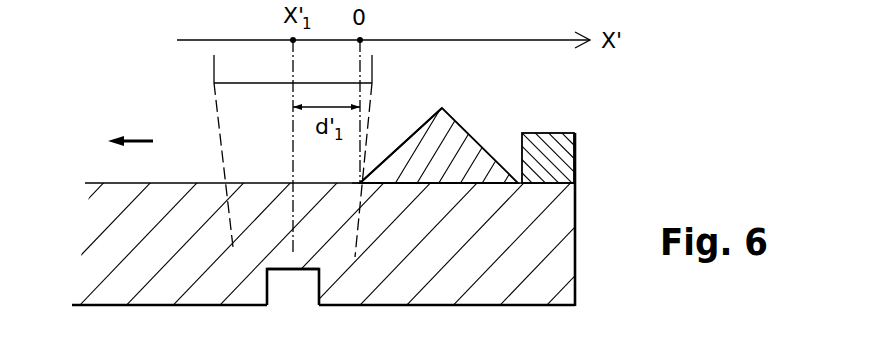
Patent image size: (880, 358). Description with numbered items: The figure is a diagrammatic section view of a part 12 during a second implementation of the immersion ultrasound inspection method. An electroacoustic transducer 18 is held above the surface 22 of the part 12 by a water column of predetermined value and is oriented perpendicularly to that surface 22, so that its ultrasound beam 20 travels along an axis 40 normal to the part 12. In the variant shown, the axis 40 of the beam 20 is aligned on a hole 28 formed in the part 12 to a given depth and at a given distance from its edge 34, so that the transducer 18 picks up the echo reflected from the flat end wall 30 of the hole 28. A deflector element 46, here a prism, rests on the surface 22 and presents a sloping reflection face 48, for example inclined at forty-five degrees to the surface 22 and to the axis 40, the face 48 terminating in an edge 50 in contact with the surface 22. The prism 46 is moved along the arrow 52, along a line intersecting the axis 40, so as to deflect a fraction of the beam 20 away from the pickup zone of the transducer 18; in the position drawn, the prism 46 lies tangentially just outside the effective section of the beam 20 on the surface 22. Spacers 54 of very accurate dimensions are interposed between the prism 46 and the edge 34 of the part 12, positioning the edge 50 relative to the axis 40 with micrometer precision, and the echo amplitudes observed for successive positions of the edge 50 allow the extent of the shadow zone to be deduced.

The part 12 is at (148, 297).
The electroacoustic transducer 18 is at (228, 68).
The ultrasound beam 20 is at (232, 123).
The surface 22 is at (117, 183).
The hole 28 is at (312, 281).
The flat end wall 30 is at (305, 269).
The edge 34 is at (575, 183).
The axis 40 is at (293, 164).
The deflector element 46 is at (482, 127).
The sloping reflection face 48 is at (408, 137).
The edge 50 is at (359, 182).
The arrow 52 is at (141, 141).
The spacers 54 is at (547, 133).